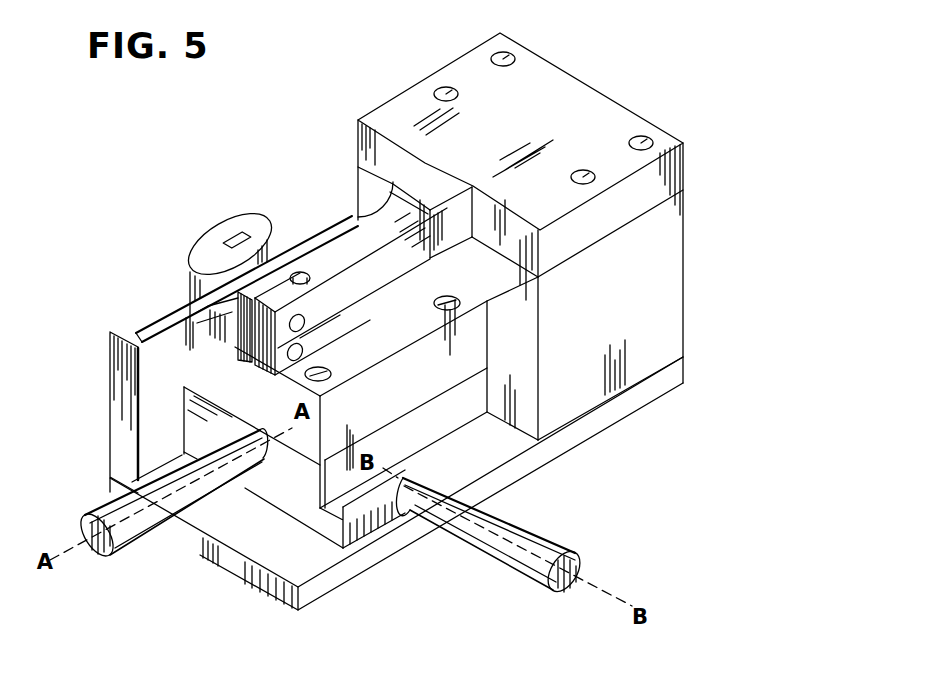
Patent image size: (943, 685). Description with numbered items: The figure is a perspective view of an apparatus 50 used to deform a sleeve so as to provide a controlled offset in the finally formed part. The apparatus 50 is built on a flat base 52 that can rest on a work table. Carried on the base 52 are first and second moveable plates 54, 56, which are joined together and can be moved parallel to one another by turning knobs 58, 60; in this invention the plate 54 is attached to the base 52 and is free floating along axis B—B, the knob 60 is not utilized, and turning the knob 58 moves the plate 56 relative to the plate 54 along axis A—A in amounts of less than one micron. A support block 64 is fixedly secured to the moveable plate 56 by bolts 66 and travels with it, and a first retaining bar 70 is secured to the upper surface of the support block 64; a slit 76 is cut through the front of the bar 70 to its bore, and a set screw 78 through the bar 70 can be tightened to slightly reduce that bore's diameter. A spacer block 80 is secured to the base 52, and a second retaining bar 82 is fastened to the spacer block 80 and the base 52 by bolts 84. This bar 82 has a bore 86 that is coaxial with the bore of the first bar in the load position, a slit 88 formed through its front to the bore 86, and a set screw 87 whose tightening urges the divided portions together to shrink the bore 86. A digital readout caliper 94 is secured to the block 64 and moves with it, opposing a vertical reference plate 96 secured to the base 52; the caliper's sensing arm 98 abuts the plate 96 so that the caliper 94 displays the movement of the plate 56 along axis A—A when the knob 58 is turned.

The apparatus 50 is at (672, 104).
The base 52 is at (318, 592).
The first moveable plate 54 is at (388, 508).
The second moveable plate 56 is at (287, 463).
The knob 58 is at (141, 540).
The knob 60 is at (560, 540).
The support block 64 is at (467, 353).
The bolts 66 is at (330, 360).
The first retaining bar 70 is at (440, 268).
The slit 76 is at (233, 358).
The set screw 78 is at (288, 372).
The spacer block 80 is at (672, 238).
The second retaining bar 82 is at (355, 222).
The bolts 84 is at (458, 94).
The bore 86 is at (298, 272).
The set screw 87 is at (302, 294).
The slit 88 is at (192, 315).
The digital readout caliper 94 is at (212, 234).
The vertical reference plate 96 is at (110, 355).
The sensing arm 98 is at (140, 340).